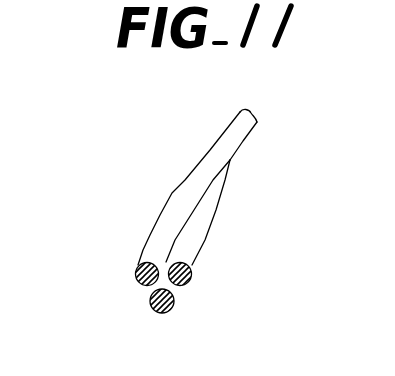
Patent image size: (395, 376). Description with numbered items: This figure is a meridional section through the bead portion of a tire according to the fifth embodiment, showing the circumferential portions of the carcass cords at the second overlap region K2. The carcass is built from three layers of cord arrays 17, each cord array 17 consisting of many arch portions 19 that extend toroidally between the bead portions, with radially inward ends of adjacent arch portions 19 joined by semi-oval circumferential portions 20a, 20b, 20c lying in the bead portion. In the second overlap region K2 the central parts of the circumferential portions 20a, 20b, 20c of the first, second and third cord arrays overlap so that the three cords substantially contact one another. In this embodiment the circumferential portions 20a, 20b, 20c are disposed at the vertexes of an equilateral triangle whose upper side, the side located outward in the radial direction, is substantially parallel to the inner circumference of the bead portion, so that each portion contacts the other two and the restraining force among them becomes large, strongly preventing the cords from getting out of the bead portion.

The second overlap region K2 is at (208, 260).
The arch portion 19 is at (210, 152).
The cord array 17 is at (168, 193).
The circumferential portion of the first cord array 20a is at (137, 282).
The circumferential portion of the second cord array 20b is at (163, 313).
The circumferential portion of the third cord array 20c is at (193, 280).